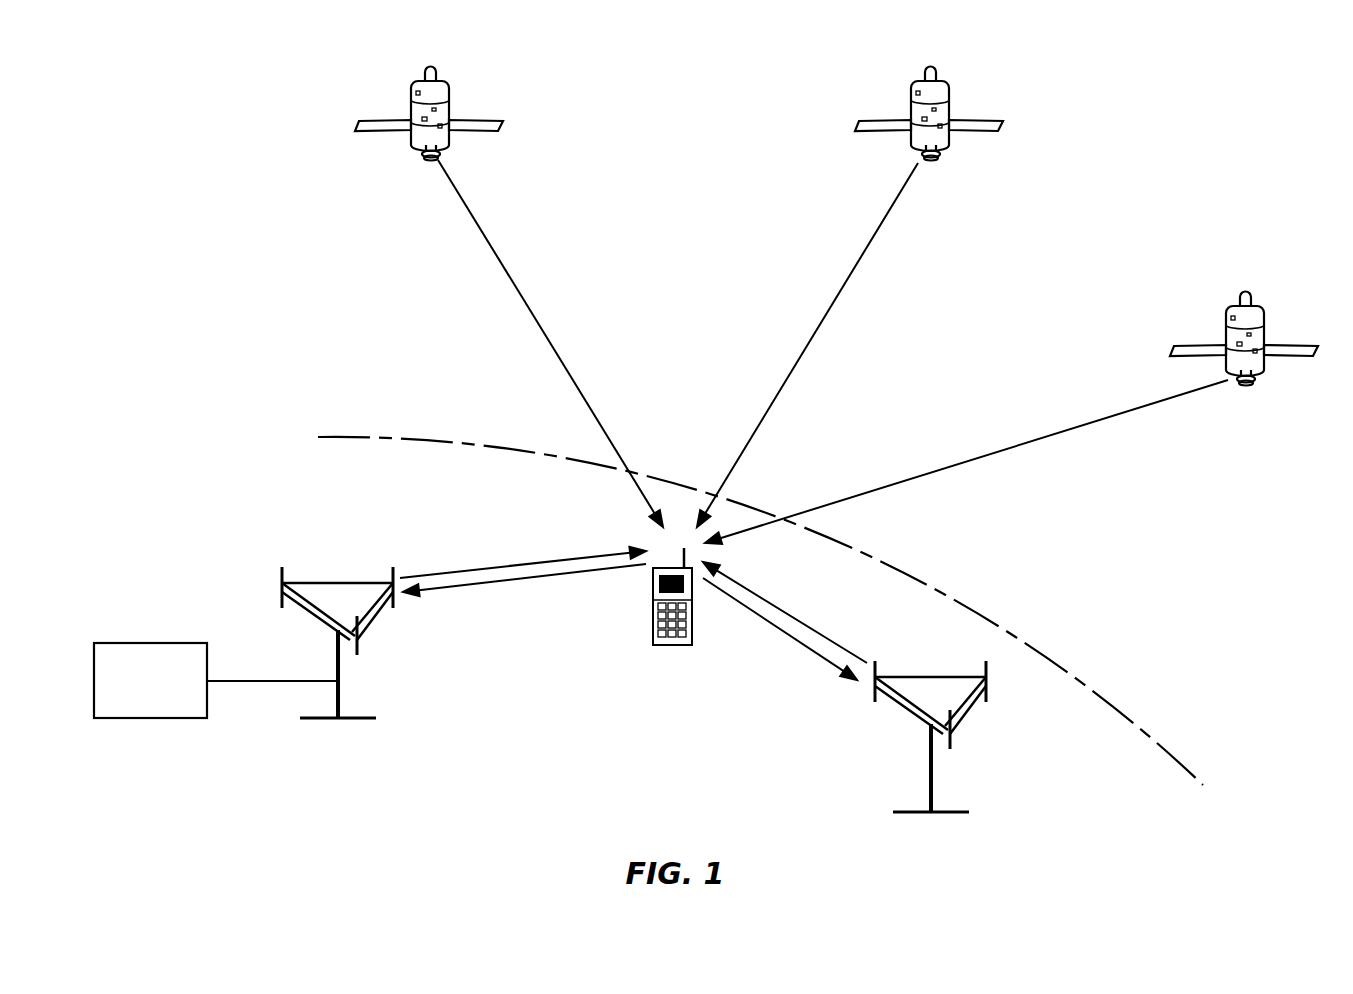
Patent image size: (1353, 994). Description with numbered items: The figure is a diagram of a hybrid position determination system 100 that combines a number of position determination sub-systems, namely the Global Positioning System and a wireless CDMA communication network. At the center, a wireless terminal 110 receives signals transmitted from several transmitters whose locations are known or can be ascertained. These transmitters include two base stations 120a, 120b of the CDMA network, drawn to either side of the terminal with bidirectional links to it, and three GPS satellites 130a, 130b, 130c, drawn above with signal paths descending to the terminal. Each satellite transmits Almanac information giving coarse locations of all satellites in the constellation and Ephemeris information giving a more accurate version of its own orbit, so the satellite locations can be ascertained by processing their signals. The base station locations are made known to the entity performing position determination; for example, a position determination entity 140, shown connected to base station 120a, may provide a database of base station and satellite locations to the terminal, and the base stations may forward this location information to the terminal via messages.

The hybrid position determination system 100 is at (200, 81).
The wireless terminal 110 is at (653, 628).
The base station 120a is at (324, 581).
The base station 120b is at (919, 676).
The satellite 130a is at (494, 105).
The satellite 130b is at (994, 105).
The satellite 130c is at (1309, 330).
The position determination entity 140 is at (143, 642).